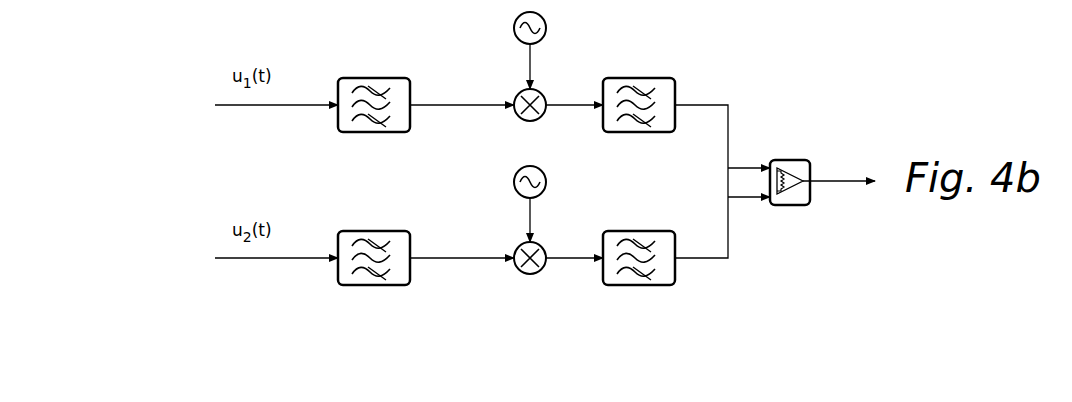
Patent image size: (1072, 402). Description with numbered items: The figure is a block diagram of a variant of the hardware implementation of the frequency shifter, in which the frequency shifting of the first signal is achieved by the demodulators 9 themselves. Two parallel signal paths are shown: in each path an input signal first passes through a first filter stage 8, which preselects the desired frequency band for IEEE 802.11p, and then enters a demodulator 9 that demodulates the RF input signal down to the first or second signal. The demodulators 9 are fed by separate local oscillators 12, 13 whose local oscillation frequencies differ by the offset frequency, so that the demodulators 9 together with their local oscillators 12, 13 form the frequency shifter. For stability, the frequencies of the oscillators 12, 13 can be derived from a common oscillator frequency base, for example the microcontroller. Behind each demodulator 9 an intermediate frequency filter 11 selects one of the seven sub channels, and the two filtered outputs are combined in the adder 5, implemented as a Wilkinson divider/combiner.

The adder 5 is at (793, 199).
The first filter stage 8 is at (397, 88).
The demodulators 9 is at (520, 118).
The intermediate frequency filters 11 is at (662, 88).
The local oscillator 12 is at (514, 33).
The local oscillator 13 is at (547, 173).